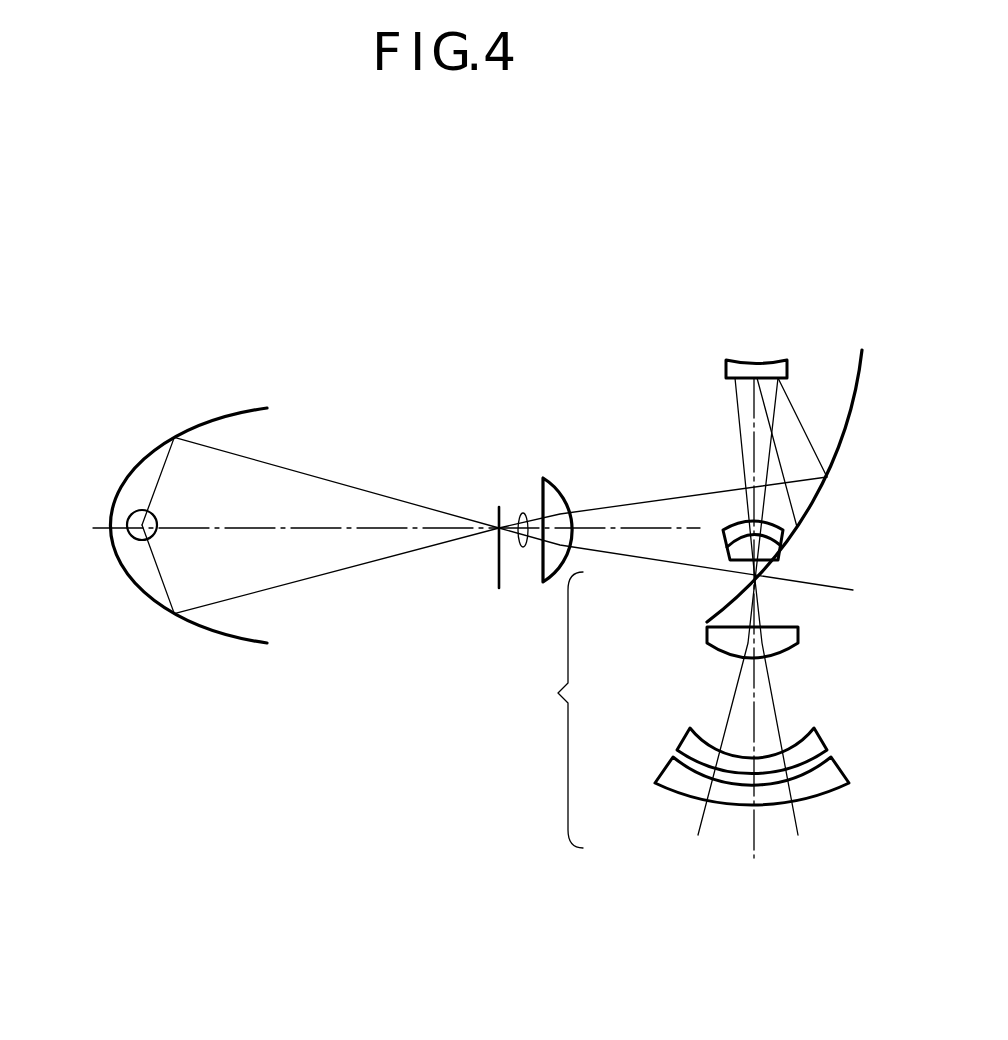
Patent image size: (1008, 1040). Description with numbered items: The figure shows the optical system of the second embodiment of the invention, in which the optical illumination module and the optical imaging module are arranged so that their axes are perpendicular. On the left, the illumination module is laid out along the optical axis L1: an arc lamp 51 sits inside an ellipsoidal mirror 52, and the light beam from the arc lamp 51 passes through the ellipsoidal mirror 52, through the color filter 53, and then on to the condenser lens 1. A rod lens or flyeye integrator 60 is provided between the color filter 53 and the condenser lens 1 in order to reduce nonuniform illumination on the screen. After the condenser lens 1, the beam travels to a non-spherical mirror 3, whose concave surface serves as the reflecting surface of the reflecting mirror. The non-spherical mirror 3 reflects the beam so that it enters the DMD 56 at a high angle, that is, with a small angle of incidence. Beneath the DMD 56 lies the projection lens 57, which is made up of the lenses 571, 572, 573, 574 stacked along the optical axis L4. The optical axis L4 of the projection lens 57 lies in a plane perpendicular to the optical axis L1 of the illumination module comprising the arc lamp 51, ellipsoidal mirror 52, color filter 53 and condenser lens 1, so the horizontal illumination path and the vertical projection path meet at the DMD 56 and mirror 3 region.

The condenser lens 1 is at (559, 493).
The non-spherical mirror 3 is at (812, 507).
The arc lamp 51 is at (128, 513).
The ellipsoidal mirror 52 is at (230, 412).
The color filter 53 is at (490, 589).
The DMD 56 is at (773, 360).
The projection lens 57 is at (683, 684).
The lens 571 is at (724, 553).
The lens 572 is at (707, 636).
The lens 573 is at (690, 742).
The lens 574 is at (676, 784).
The rod lens or flyeye integrator 60 is at (525, 512).
The optical axis of the optical illumination module L1 is at (316, 527).
The optical axis of the projection lens L4 is at (757, 827).